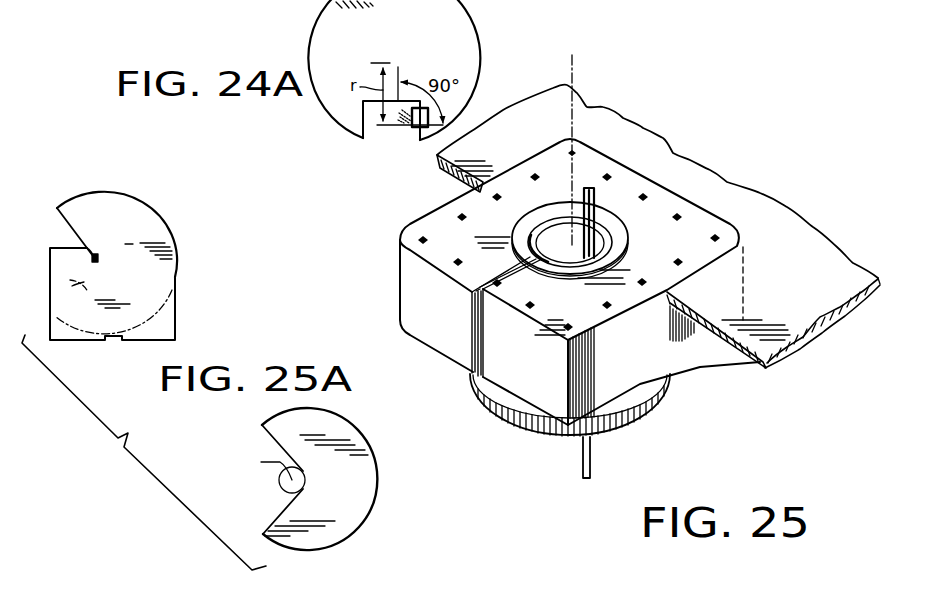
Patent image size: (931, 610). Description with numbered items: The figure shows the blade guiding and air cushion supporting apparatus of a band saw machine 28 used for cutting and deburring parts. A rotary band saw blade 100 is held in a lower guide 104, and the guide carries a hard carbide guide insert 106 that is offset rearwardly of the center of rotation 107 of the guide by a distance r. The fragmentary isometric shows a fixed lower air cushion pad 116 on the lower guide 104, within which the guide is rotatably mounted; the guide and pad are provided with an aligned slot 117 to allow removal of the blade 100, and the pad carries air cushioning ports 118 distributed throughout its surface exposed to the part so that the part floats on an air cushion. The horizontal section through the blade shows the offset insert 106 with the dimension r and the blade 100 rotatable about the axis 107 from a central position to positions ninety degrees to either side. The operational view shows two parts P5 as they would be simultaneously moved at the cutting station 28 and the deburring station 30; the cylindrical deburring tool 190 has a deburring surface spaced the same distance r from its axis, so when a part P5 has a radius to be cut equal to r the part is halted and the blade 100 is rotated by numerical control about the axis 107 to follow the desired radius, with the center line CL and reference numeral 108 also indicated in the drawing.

In FIG. 24A, the rotary band saw blade 100 is at (412, 125).
In FIG. 25A, the rotary band saw blade 100 is at (98, 259).
In FIG. 25, the rotary band saw blade 100 is at (582, 461).
In FIG. 25, the lower guide 104 is at (560, 216).
In FIG. 25, the hard carbide guide insert 106 is at (594, 226).
In FIG. 24A, the center of rotation (axis) 107 is at (398, 62).
In FIG. 25A, the center of rotation (axis) 107 is at (91, 261).
In FIG. 25, the center of rotation (axis) 107 is at (585, 108).
In FIG. 24A, the element 108 is at (198, 3).
In FIG. 25, the fixed lower air cushion pad 116 is at (686, 364).
In FIG. 25, the aligned slot 117 is at (480, 352).
In FIG. 25, the air cushioning ports 118 is at (720, 237).
In FIG. 25A, the deburring tool 190 is at (286, 491).
In FIG. 25A, the band saw machine (cutting station) 28 is at (128, 261).
In FIG. 25A, the deburring station 30 is at (330, 474).
In FIG. 25A, the part P5 is at (101, 195).
In FIG. 25A, the center line CL is at (162, 292).